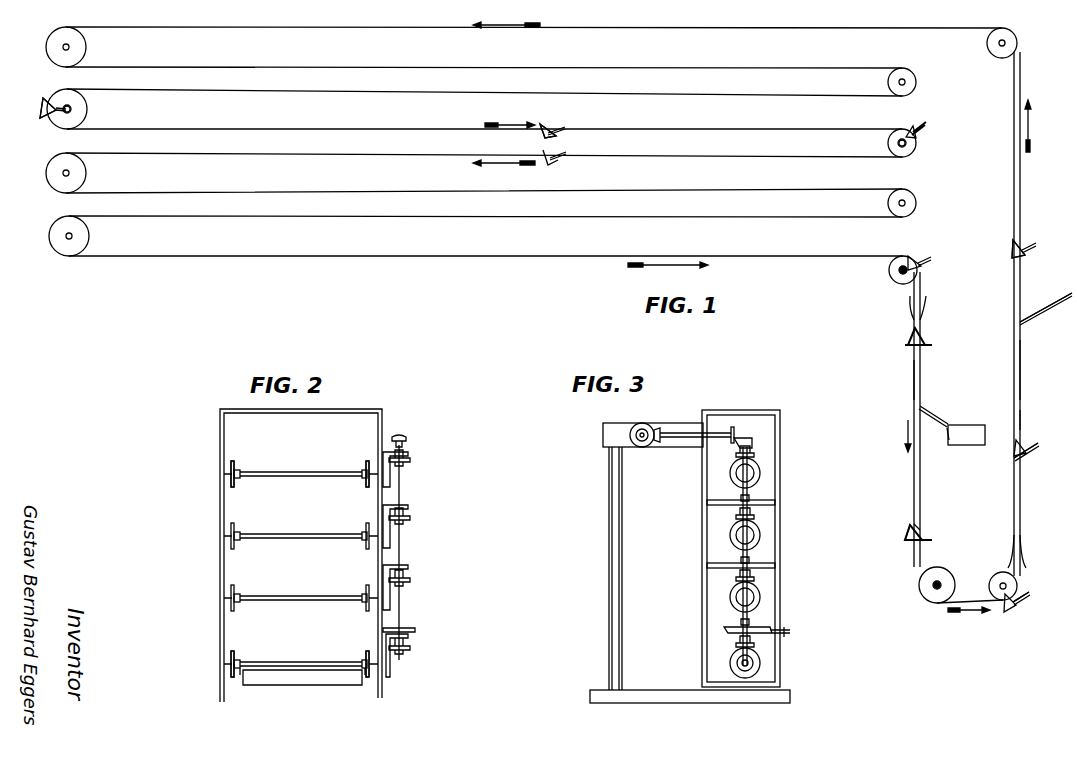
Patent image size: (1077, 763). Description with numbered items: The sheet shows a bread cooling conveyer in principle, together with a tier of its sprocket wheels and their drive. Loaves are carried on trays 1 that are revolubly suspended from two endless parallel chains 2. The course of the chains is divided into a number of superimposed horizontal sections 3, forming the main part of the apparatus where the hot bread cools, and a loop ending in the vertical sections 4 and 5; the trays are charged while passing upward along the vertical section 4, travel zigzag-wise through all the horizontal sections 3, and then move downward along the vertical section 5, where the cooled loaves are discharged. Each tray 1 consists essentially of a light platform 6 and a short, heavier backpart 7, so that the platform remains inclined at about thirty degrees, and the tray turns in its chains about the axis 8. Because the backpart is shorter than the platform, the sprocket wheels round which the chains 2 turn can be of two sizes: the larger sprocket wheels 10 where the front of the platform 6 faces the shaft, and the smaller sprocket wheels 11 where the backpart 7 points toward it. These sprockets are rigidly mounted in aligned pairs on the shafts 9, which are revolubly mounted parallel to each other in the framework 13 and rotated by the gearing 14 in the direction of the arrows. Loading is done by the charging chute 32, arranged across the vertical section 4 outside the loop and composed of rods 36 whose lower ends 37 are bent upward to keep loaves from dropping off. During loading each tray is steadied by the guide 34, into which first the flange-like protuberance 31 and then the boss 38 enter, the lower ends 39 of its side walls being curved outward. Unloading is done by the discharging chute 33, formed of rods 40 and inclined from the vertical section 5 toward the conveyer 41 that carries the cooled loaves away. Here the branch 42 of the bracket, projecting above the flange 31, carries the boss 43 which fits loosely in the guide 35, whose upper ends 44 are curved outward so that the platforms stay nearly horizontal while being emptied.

In FIG. 1, the tray 1 is at (44, 98).
In FIG. 2, the tray 1 is at (308, 686).
In FIG. 1, the endless parallel chains 2 is at (594, 28).
In FIG. 1, the horizontal sections 3 is at (739, 66).
In FIG. 1, the vertical section 4 is at (1021, 378).
In FIG. 1, the vertical section 5 is at (913, 380).
In FIG. 1, the platform 6 is at (62, 113).
In FIG. 1, the backpart 7 is at (914, 141).
In FIG. 1, the axis 8 is at (43, 105).
In FIG. 1, the shafts 9 is at (69, 108).
In FIG. 2, the shafts 9 is at (322, 473).
In FIG. 1, the larger sprocket wheels 10 is at (46, 44).
In FIG. 1, the smaller sprocket wheels 11 is at (1018, 43).
In FIG. 2, the smaller sprocket wheels 11 is at (235, 484).
In FIG. 2, the framework 13 is at (296, 412).
In FIG. 3, the framework 13 is at (702, 514).
In FIG. 2, the gearing 14 is at (405, 645).
In FIG. 3, the gearing 14 is at (660, 432).
In FIG. 1, the flange-like protuberance 31 is at (910, 336).
In FIG. 1, the charging chute 32 is at (1062, 300).
In FIG. 1, the discharging chute 33 is at (943, 418).
In FIG. 1, the guide 34 is at (1022, 424).
In FIG. 1, the guide 35 is at (914, 524).
In FIG. 1, the rods 36 is at (1052, 305).
In FIG. 1, the lower ends 37 is at (1022, 318).
In FIG. 1, the boss 38 is at (1018, 452).
In FIG. 1, the lower ends 39 is at (1026, 548).
In FIG. 1, the rods 40 is at (946, 430).
In FIG. 1, the conveyer 41 is at (978, 425).
In FIG. 1, the branch 42 is at (560, 122).
In FIG. 1, the boss 43 is at (921, 529).
In FIG. 1, the upper ends 44 is at (910, 308).